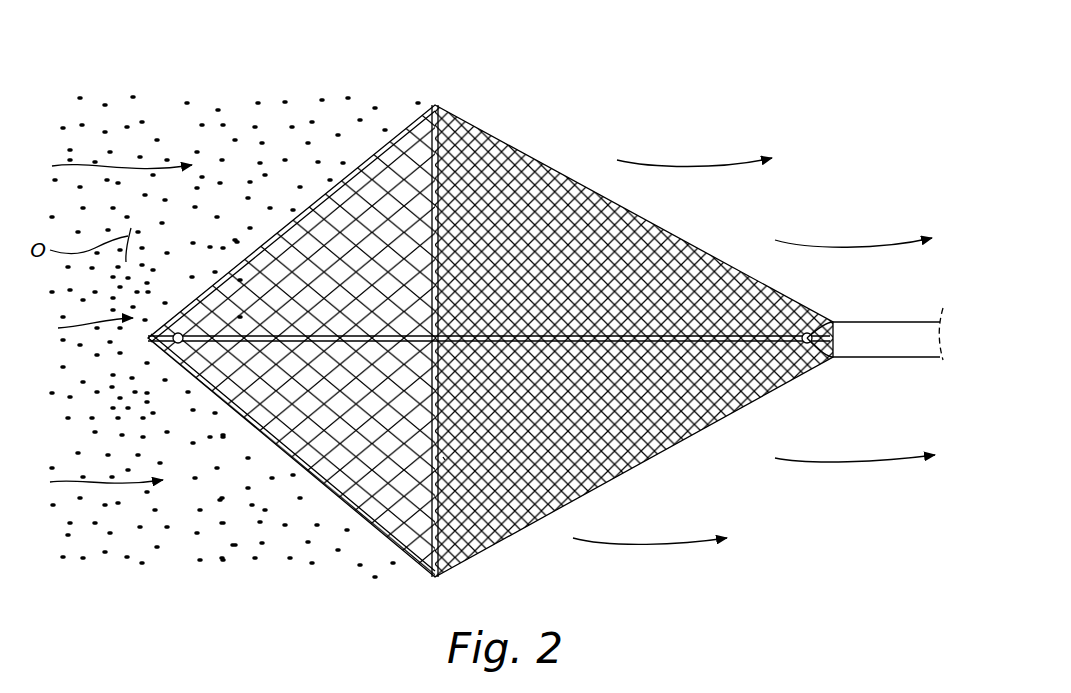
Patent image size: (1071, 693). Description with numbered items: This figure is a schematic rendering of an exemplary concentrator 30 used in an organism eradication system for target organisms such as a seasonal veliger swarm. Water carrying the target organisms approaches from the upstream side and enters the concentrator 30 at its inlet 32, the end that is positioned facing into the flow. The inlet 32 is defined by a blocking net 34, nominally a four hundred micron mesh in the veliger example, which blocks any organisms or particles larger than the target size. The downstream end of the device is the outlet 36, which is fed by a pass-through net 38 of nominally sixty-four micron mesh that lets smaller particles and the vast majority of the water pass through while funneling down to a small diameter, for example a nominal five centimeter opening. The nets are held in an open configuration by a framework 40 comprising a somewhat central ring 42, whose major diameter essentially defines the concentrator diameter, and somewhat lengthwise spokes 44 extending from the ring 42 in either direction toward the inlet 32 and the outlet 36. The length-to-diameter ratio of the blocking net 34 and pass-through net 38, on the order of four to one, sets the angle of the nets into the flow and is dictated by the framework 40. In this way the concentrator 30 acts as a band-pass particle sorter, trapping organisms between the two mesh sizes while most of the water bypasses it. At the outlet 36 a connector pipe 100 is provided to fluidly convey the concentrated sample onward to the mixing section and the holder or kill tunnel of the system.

The concentrator 30 is at (226, 90).
The inlet 32 is at (187, 130).
The blocking net 34 is at (360, 165).
The outlet 36 is at (843, 296).
The pass-through net 38 is at (530, 155).
The framework 40 is at (425, 585).
The central ring 42 is at (443, 457).
The spokes 44 is at (298, 340).
The connector pipe 100 is at (865, 355).